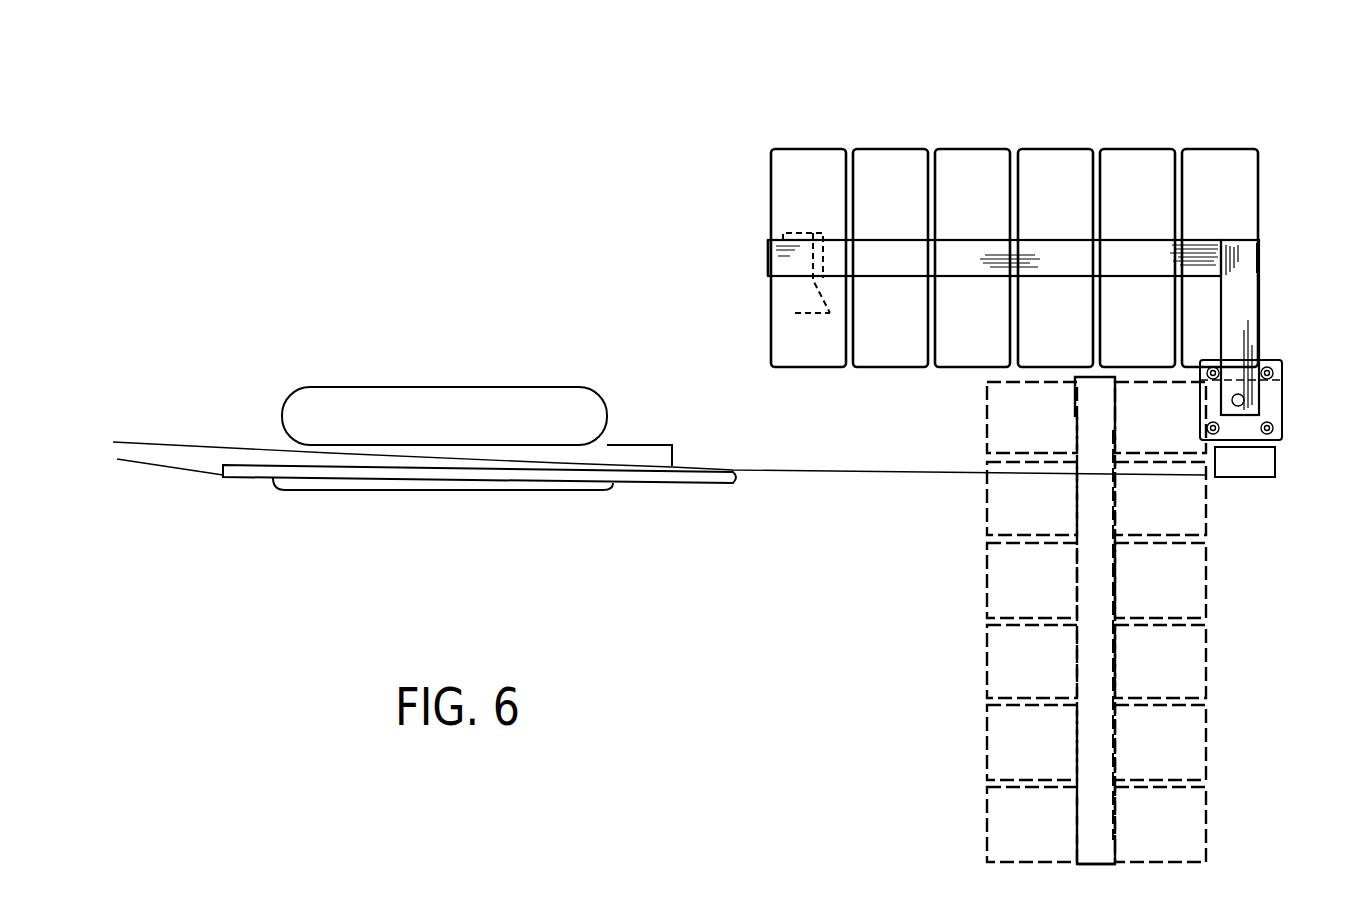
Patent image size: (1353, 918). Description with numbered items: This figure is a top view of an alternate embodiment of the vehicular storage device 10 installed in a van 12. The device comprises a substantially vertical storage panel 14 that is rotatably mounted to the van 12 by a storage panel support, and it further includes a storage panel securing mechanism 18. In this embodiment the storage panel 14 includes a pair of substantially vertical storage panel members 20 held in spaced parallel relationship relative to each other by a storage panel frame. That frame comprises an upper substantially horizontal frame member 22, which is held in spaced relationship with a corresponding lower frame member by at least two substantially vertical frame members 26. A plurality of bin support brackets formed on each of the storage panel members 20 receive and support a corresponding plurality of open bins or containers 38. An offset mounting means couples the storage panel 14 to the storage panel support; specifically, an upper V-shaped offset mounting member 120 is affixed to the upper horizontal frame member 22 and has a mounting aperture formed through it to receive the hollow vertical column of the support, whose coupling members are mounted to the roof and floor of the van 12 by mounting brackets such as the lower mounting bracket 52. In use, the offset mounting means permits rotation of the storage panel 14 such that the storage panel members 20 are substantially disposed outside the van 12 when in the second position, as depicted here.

The vehicular storage device 10 is at (1026, 96).
The van 12 is at (502, 549).
The substantially vertical storage panel 14 is at (1016, 128).
The storage panel securing mechanism 18 is at (810, 282).
The substantially vertical storage panel member 20 is at (1128, 240).
The upper substantially horizontal frame member 22 is at (898, 278).
The substantially vertical frame member 26 is at (768, 250).
The open bin or container 38 is at (783, 148).
The lower mounting bracket 52 is at (1288, 382).
The upper V-shaped offset mounting member 120 is at (1255, 316).